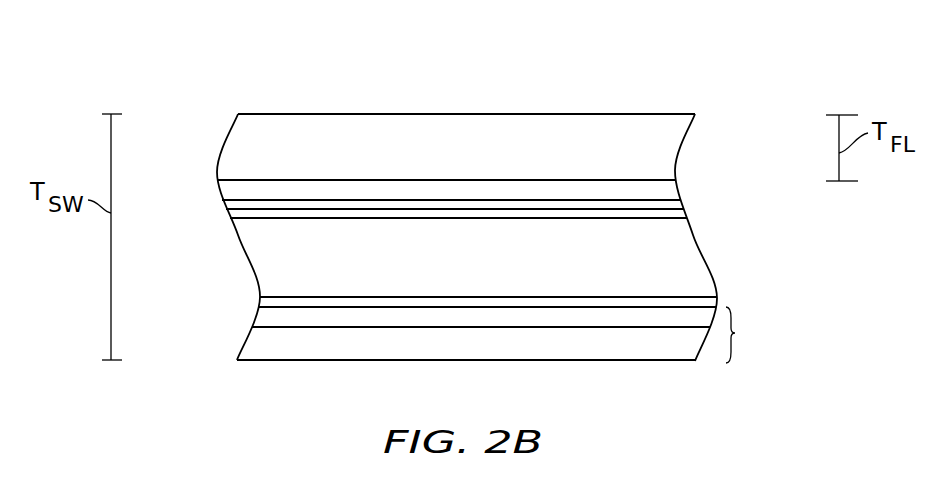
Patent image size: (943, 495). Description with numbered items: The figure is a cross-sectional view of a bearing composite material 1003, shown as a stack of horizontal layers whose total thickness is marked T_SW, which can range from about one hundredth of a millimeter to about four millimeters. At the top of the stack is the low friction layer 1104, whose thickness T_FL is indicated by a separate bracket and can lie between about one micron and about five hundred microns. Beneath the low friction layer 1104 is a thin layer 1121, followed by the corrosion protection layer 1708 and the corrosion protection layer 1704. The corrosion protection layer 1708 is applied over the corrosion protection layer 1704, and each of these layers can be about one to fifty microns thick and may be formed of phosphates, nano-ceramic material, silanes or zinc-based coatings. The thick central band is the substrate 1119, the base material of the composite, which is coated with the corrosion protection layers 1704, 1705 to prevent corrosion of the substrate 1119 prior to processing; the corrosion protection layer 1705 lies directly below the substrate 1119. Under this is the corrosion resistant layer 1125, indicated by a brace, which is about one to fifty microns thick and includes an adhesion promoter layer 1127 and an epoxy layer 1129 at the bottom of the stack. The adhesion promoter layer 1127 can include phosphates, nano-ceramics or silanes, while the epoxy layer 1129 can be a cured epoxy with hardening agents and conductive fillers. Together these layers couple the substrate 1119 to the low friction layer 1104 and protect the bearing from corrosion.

The composite material 1003 is at (797, 72).
The low friction layer 1104 is at (219, 150).
The layer 1121 is at (219, 190).
The corrosion protection layer 1708 is at (680, 205).
The corrosion protection layer 1704 is at (684, 213).
The substrate 1119 is at (242, 246).
The corrosion protection layer 1705 is at (717, 301).
The adhesion promoter layer 1127 is at (257, 316).
The epoxy layer 1129 is at (241, 352).
The corrosion resistant layer 1125 is at (759, 335).